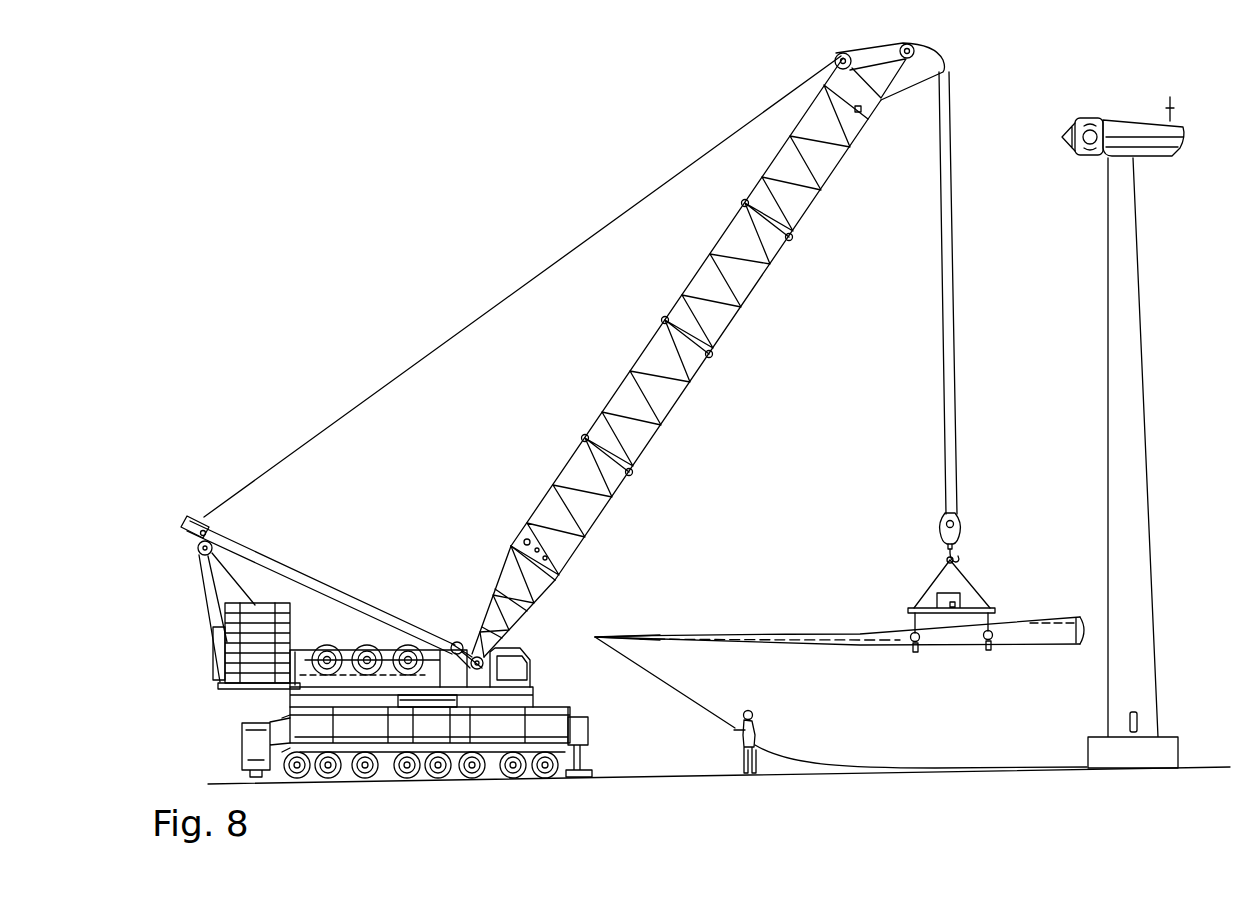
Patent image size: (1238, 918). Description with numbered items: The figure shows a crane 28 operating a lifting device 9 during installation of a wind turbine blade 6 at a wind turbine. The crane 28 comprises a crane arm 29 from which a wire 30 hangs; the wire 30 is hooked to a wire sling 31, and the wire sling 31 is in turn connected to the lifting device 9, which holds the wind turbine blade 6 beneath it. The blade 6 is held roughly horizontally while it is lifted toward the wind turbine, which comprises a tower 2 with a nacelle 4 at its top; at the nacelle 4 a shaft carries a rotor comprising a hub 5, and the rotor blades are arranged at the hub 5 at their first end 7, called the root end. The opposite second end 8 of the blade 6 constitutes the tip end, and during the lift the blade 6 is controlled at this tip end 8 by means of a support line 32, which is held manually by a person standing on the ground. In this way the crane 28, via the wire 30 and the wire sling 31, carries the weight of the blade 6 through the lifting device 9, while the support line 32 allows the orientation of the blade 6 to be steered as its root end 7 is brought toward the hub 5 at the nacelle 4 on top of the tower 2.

The crane 28 is at (296, 364).
The crane arm 29 is at (683, 393).
The wire 30 is at (954, 303).
The wire sling 31 is at (961, 573).
The lifting device 9 is at (994, 609).
The wind turbine blade 6 is at (863, 644).
The first end 7 is at (1083, 645).
The second end 8 is at (597, 636).
The support line 32 is at (690, 696).
The tower 2 is at (1148, 492).
The nacelle 4 is at (1160, 157).
The hub 5 is at (1090, 118).